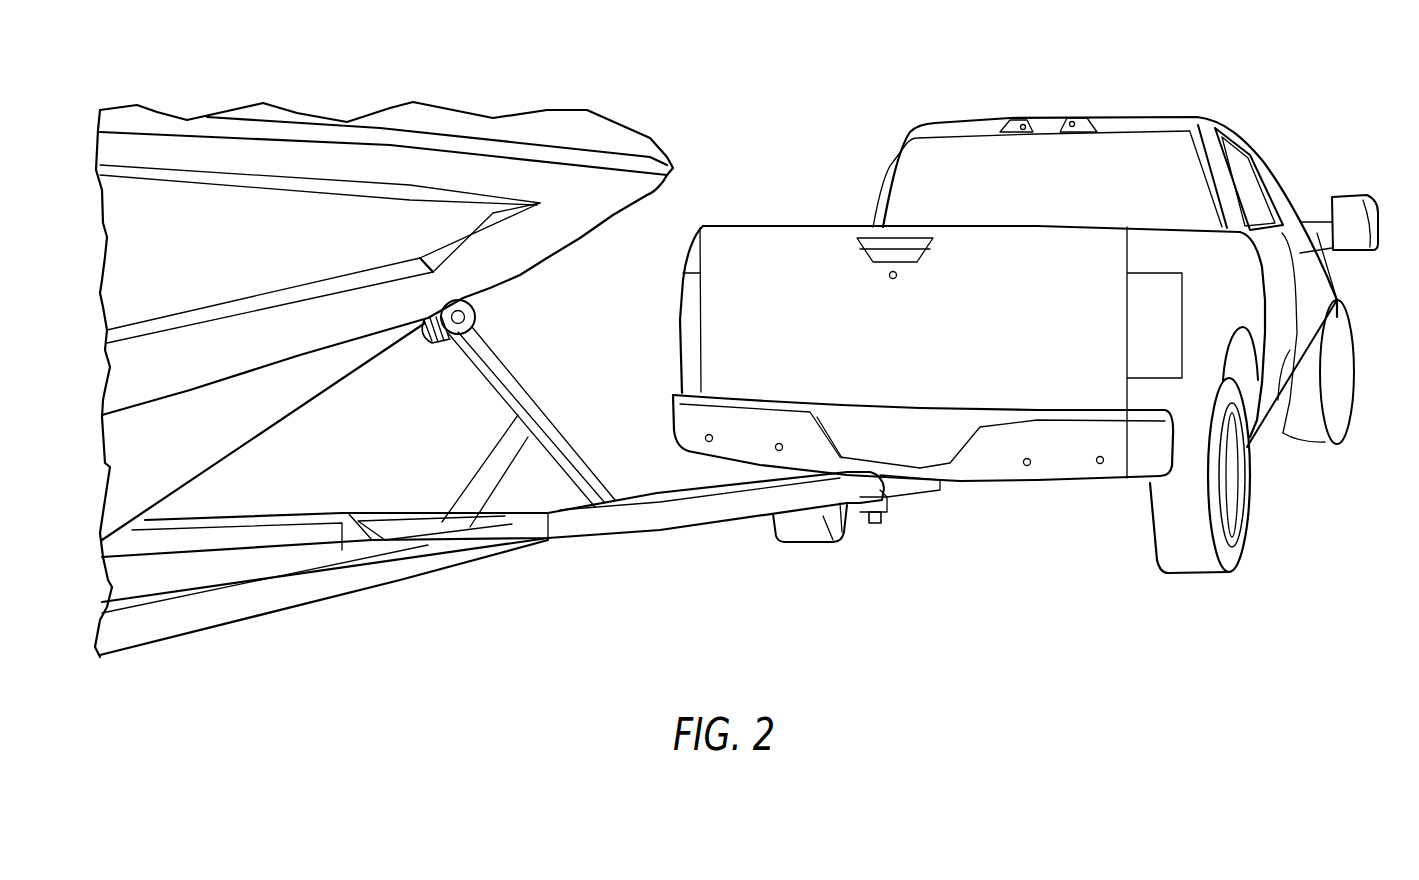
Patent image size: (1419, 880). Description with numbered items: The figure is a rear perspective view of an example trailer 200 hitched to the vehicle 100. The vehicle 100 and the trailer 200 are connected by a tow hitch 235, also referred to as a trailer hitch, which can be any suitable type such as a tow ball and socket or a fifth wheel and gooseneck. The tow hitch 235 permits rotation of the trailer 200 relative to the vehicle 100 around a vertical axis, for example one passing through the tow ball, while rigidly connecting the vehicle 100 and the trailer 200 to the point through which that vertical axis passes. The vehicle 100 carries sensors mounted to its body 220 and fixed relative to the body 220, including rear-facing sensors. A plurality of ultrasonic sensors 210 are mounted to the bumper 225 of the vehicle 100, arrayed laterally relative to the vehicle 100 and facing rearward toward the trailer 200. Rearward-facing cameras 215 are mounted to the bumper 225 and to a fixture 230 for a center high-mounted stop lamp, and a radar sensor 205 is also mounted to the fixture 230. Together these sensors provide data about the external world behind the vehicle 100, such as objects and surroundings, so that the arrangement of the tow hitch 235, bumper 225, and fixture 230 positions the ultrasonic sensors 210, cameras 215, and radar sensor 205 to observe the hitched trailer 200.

The vehicle 100 is at (1297, 148).
The trailer 200 is at (678, 153).
The radar sensor 205 is at (1073, 121).
The ultrasonic sensors 210 is at (778, 451).
The cameras 215 is at (1010, 117).
The body 220 is at (1278, 368).
The bumper 225 is at (1147, 453).
The fixture for a center high-mounted stop lamp 230 is at (1094, 124).
The tow hitch 235 is at (877, 525).